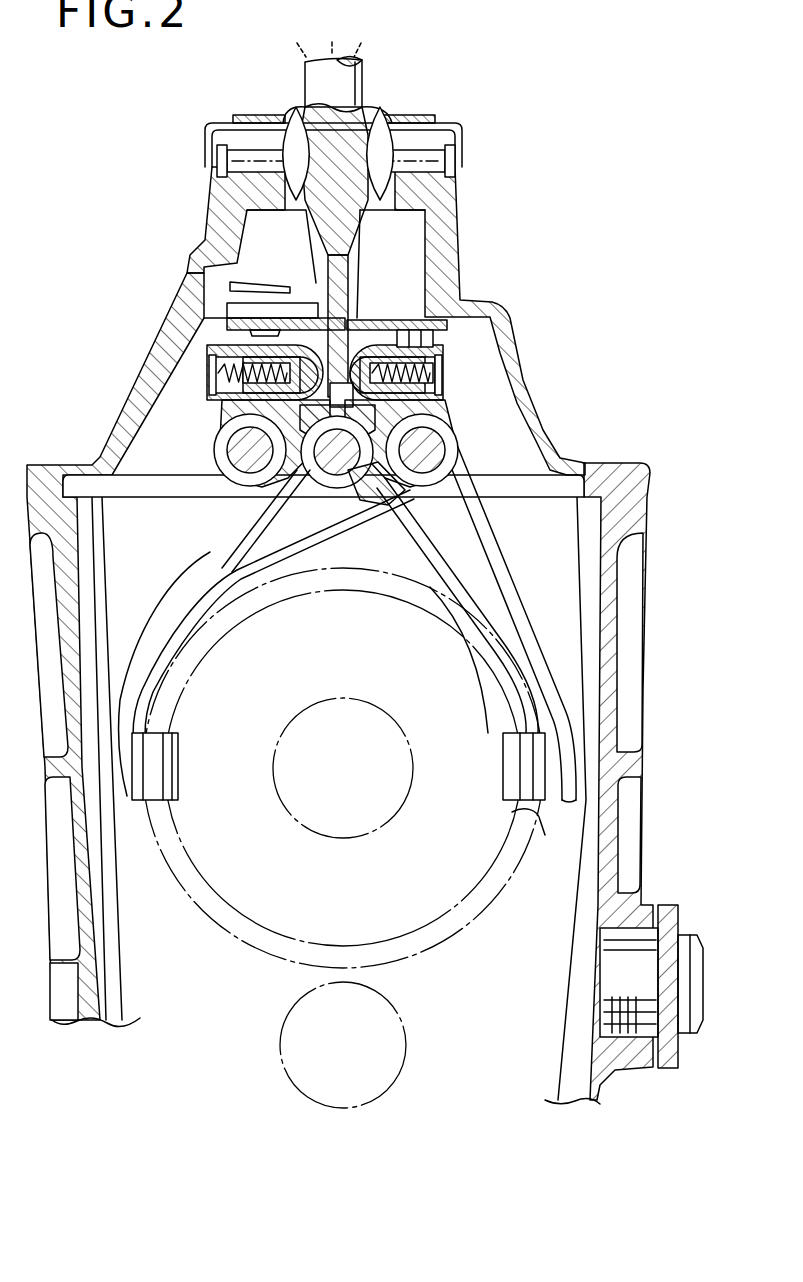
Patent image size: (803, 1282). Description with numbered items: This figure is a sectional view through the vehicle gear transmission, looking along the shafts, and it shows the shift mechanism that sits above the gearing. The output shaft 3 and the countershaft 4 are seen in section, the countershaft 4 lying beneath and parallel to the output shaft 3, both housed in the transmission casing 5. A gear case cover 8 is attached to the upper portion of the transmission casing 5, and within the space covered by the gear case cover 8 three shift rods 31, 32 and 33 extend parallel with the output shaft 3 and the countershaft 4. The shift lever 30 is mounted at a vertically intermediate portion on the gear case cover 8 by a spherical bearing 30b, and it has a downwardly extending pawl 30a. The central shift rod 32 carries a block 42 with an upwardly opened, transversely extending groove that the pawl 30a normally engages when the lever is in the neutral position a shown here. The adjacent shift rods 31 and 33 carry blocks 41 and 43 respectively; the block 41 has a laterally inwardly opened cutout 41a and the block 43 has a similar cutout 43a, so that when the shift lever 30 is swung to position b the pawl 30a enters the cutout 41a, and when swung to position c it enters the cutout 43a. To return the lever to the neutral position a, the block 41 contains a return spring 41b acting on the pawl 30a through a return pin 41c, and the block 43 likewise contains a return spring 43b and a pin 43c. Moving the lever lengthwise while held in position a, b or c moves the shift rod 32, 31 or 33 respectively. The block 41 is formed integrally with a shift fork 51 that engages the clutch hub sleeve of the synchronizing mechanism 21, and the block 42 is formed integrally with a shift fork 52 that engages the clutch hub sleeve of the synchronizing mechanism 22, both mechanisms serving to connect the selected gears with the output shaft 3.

The output shaft 3 is at (375, 722).
The countershaft 4 is at (402, 1040).
The transmission casing 5 is at (608, 605).
The gear case cover 8 is at (448, 220).
The synchronizing mechanism 21 is at (208, 900).
The synchronizing mechanism 22 is at (538, 850).
The shift lever 30 is at (356, 90).
The pawl 30a is at (340, 292).
The spherical bearing 30b is at (280, 190).
The shift rod 31 is at (443, 437).
The shift rod 32 is at (347, 493).
The shift rod 33 is at (242, 452).
The block 41 is at (450, 350).
The cutout 41a is at (357, 347).
The return spring 41b is at (430, 373).
The return pin 41c is at (430, 393).
The block 42 is at (325, 398).
The block 43 is at (200, 337).
The cutout 43a is at (315, 347).
The return spring 43b is at (215, 350).
The pin 43c is at (237, 405).
The shift fork 51 is at (497, 556).
The shift fork 52 is at (432, 522).
The neutral position a is at (329, 38).
The position b is at (295, 40).
The position c is at (363, 40).